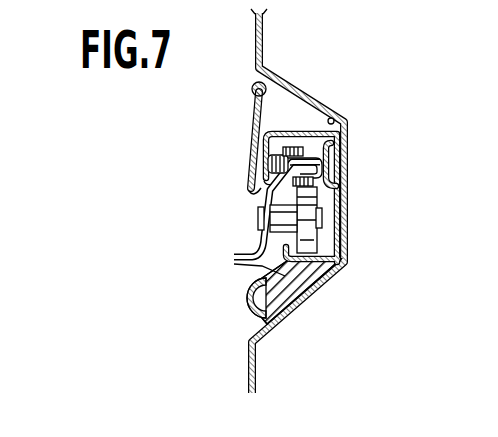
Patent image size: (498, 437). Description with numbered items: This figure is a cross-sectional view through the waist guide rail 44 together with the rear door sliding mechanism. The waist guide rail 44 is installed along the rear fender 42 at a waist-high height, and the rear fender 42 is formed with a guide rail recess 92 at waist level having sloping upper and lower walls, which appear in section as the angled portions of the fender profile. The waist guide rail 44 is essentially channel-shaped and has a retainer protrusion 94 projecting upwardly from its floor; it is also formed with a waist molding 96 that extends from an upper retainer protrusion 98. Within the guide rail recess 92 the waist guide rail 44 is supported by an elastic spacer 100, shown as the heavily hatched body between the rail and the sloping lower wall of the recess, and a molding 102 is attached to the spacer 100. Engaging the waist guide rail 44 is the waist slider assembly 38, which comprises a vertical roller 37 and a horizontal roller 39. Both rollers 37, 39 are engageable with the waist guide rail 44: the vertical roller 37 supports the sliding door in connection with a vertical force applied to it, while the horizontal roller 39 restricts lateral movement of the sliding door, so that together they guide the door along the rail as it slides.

The vertical roller 37 is at (307, 205).
The waist slider assembly 38 is at (240, 232).
The horizontal roller 39 is at (272, 157).
The rear fender 42 is at (263, 43).
The waist guide rail 44 is at (340, 188).
The guide rail recess 92 is at (346, 125).
The retainer protrusion 94 is at (262, 266).
The waist molding 96 is at (250, 117).
The upper retainer protrusion 98 is at (246, 188).
The elastic spacer 100 is at (311, 272).
The molding 102 is at (241, 310).